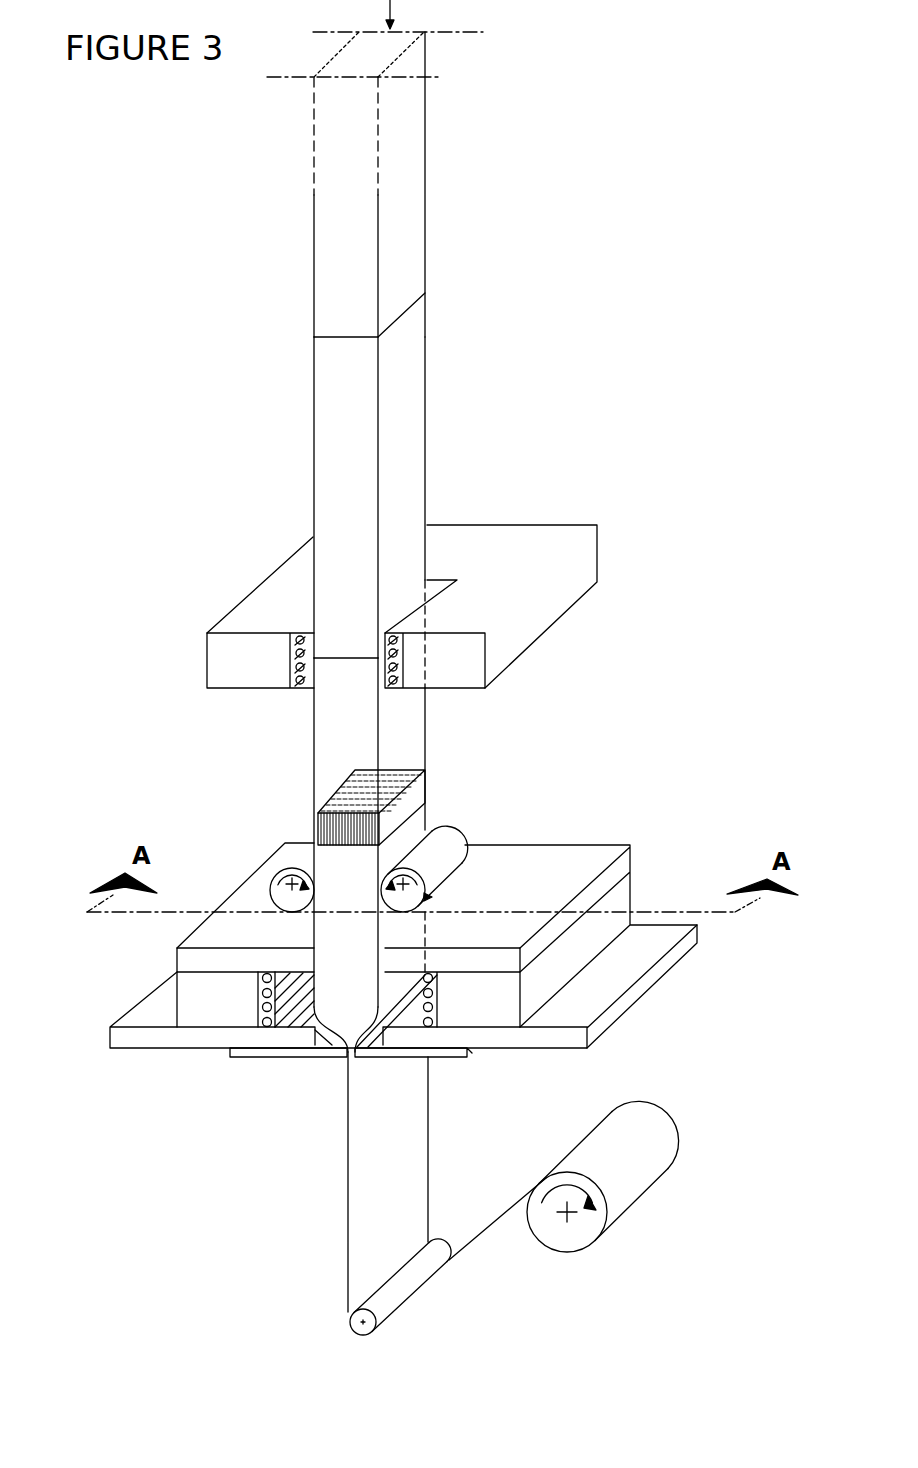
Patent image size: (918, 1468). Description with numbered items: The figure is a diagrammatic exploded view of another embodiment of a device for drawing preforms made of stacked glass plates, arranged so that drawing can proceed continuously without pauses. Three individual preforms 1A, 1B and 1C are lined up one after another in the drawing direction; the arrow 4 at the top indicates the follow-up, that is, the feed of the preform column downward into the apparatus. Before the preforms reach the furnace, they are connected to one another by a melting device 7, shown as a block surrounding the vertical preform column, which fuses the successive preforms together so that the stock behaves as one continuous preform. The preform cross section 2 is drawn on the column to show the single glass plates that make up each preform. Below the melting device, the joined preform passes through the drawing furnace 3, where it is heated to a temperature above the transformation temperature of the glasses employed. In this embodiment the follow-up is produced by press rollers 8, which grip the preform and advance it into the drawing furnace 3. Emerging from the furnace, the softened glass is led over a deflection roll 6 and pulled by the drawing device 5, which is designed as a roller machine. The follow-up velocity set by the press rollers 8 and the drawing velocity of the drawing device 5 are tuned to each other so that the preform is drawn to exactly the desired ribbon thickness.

The individual preform 1A is at (415, 747).
The individual preform 1B is at (413, 432).
The individual preform 1C is at (410, 195).
The preform cross section 2 is at (320, 825).
The drawing furnace 3 is at (583, 860).
The arrow 4 is at (403, 14).
The drawing device 5 is at (622, 1192).
The deflection roll 6 is at (397, 1298).
The melting device 7 is at (523, 630).
The press rollers 8 is at (445, 847).